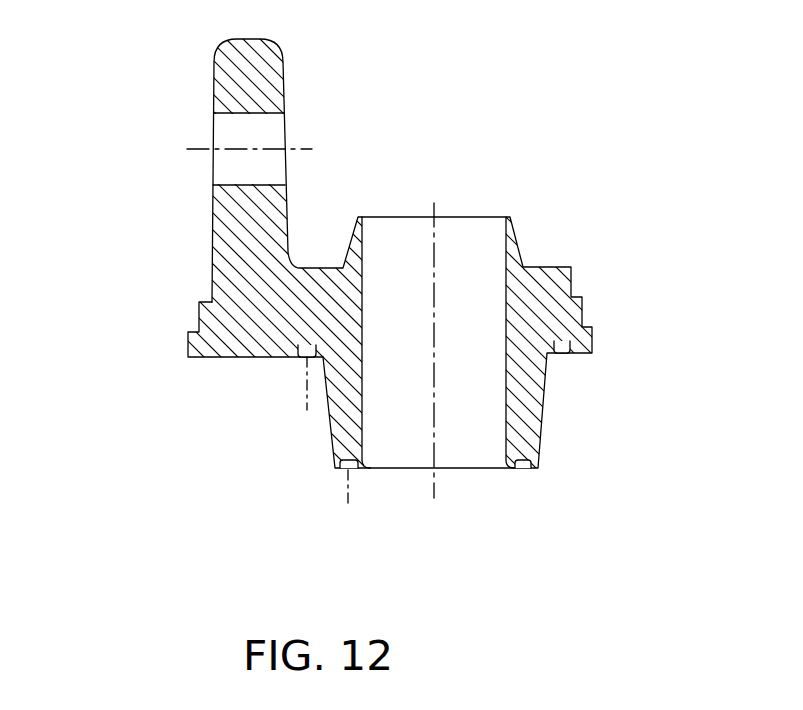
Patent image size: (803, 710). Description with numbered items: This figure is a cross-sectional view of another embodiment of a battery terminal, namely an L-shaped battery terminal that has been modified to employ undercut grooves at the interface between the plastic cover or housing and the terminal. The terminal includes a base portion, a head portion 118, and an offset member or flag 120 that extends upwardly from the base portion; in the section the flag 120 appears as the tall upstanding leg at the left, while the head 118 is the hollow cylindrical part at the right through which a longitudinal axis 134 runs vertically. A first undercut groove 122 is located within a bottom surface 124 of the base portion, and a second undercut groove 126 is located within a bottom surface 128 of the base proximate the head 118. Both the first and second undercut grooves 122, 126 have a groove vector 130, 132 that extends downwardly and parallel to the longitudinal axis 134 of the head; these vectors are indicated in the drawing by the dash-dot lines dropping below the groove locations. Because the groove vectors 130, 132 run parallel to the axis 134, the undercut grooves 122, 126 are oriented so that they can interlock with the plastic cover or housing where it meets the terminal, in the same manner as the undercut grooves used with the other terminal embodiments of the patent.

The head portion 118 is at (528, 418).
The offset member or flag 120 is at (225, 243).
The first undercut groove 122 is at (527, 472).
The bottom surface 124 is at (478, 472).
The second undercut groove 126 is at (562, 348).
The bottom surface 128 is at (229, 358).
The groove vector 130 is at (352, 528).
The groove vector 132 is at (307, 410).
The longitudinal axis 134 is at (441, 233).